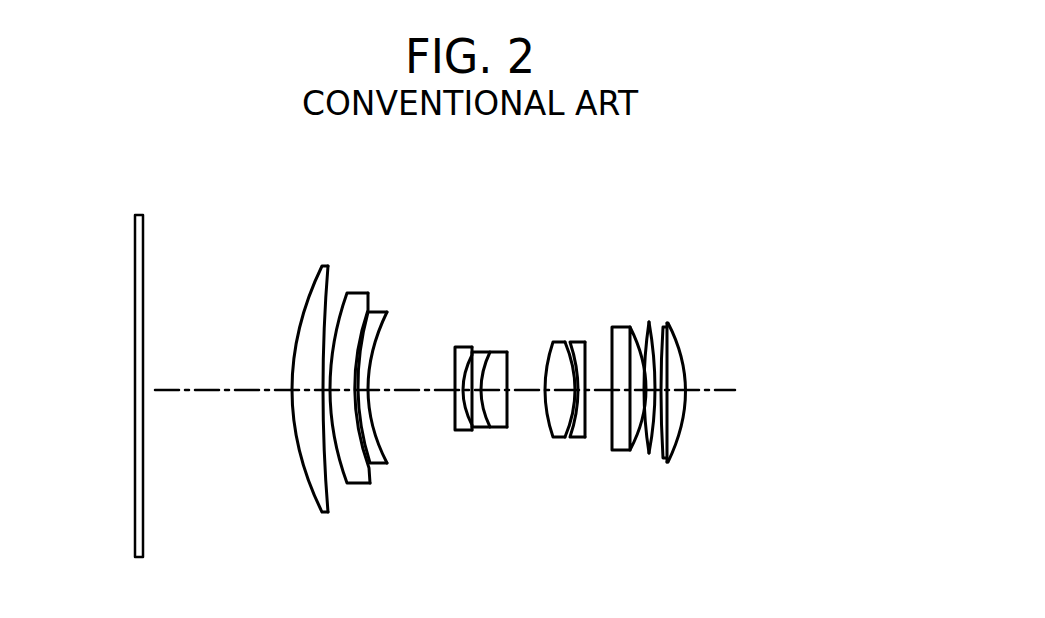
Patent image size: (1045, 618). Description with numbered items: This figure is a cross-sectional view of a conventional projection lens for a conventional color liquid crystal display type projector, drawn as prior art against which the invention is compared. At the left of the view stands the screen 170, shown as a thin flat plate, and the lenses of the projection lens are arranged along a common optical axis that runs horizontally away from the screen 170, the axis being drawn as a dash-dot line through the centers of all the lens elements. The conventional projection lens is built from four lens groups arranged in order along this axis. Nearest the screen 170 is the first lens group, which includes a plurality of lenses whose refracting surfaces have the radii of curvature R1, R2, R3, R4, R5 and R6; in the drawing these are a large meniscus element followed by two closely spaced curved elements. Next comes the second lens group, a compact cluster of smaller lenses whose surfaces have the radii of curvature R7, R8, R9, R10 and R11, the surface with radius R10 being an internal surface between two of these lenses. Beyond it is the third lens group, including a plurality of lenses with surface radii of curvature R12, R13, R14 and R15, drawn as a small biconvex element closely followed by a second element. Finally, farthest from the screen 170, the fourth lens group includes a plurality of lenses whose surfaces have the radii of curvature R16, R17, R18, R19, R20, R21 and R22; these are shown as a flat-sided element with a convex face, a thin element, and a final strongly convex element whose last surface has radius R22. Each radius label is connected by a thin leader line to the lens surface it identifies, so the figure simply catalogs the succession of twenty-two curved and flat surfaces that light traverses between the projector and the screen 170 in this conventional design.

The screen 170 is at (143, 537).
The radius of curvature R1 is at (300, 312).
The radius of curvature R2 is at (329, 272).
The radius of curvature R3 is at (334, 316).
The radius of curvature R4 is at (366, 318).
The radius of curvature R5 is at (388, 322).
The radius of curvature R6 is at (380, 340).
The radius of curvature R7 is at (450, 423).
The radius of curvature R8 is at (462, 432).
The radius of curvature R9 is at (482, 430).
The radius of curvature R10 is at (490, 427).
The radius of curvature R11 is at (507, 400).
The radius of curvature R12 is at (547, 358).
The radius of curvature R13 is at (567, 345).
The radius of curvature R14 is at (574, 346).
The radius of curvature R15 is at (587, 350).
The radius of curvature R16 is at (612, 448).
The radius of curvature R17 is at (628, 450).
The radius of curvature R18 is at (647, 453).
The radius of curvature R19 is at (647, 322).
The radius of curvature R20 is at (663, 327).
The radius of curvature R21 is at (670, 330).
The radius of curvature R22 is at (678, 342).